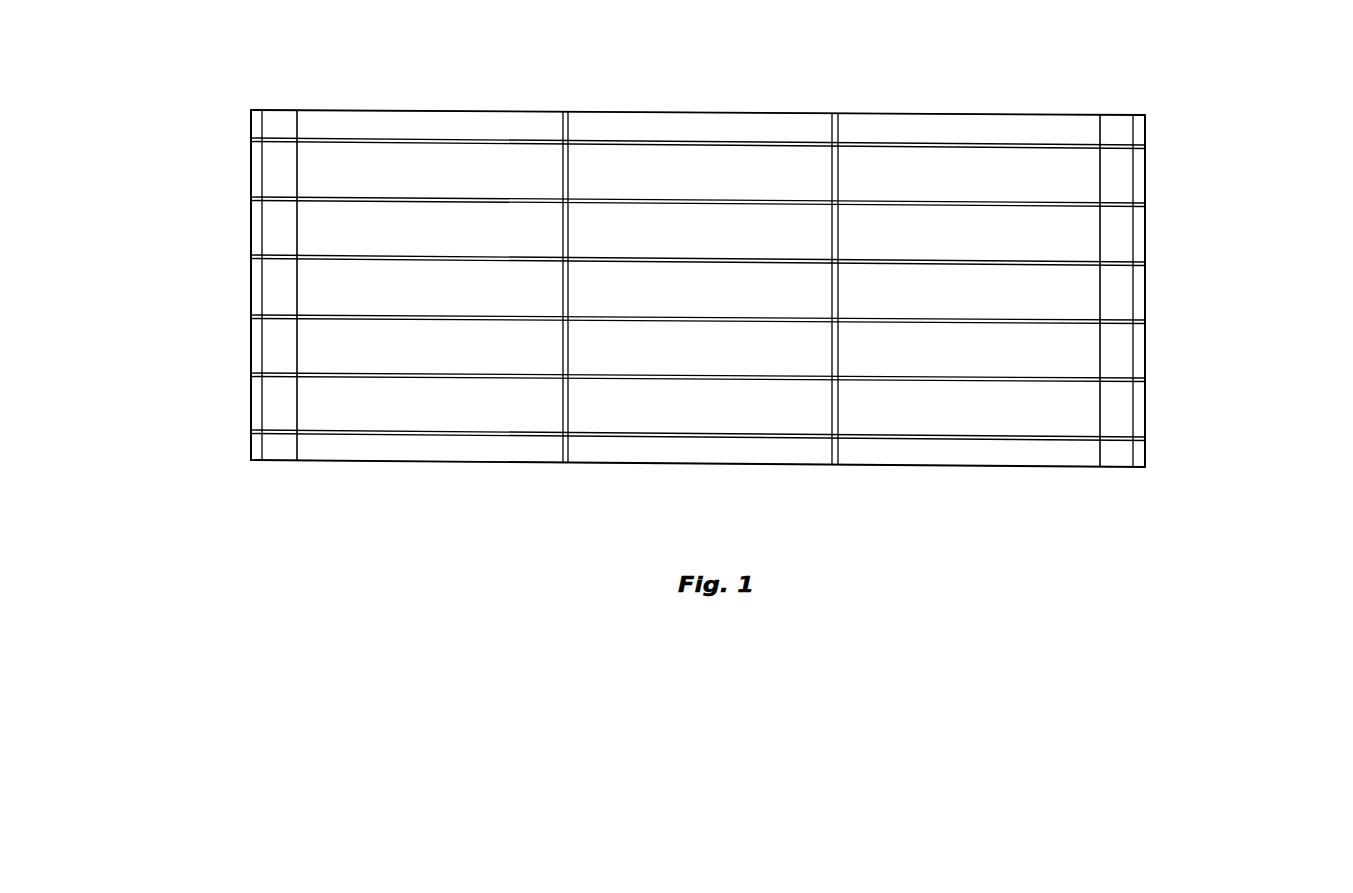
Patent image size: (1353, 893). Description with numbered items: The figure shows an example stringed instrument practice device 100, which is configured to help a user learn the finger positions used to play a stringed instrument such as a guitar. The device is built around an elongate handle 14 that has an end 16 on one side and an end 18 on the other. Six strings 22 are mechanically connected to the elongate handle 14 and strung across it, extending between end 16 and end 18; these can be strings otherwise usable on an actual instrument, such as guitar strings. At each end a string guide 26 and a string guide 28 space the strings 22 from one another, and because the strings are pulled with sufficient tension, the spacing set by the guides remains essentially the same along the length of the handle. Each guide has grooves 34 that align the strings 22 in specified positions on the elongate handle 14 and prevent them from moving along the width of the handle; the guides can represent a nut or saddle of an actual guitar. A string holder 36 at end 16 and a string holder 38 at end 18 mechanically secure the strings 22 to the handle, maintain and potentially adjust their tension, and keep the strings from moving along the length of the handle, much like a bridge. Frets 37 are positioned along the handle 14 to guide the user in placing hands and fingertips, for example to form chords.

The stringed instrument practice device 100 is at (310, 554).
The elongate handle 14 is at (1148, 187).
The end 16 is at (252, 448).
The end 18 is at (1146, 233).
The strings 22 is at (251, 140).
The string guide 26 is at (282, 116).
The string guide 28 is at (1118, 468).
The grooves 34 is at (299, 131).
The string holder 36 is at (252, 124).
The frets 37 is at (565, 110).
The string holder 38 is at (1139, 360).